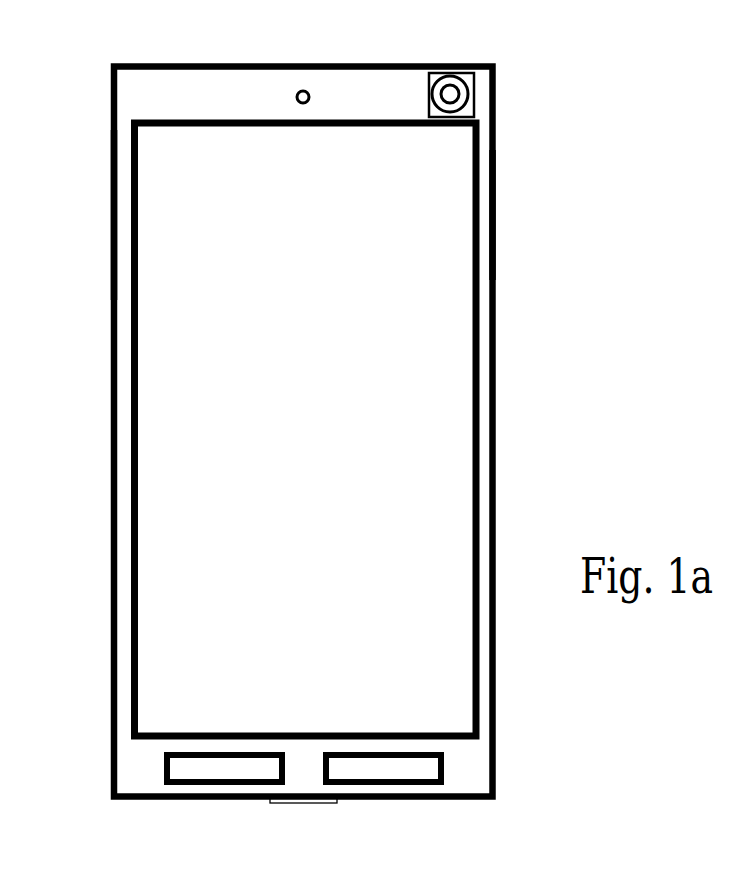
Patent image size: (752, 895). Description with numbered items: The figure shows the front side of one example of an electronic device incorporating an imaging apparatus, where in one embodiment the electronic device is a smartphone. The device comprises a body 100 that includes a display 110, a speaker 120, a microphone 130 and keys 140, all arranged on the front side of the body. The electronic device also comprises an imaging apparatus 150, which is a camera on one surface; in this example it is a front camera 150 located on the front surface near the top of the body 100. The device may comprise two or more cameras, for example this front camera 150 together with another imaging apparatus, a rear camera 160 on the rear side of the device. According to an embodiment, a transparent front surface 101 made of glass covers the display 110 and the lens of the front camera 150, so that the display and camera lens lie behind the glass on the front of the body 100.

The body 100 is at (125, 98).
The transparent front surface 101 is at (125, 211).
The display 110 is at (158, 328).
The speaker 120 is at (303, 90).
The microphone 130 is at (297, 804).
The keys 140 is at (340, 752).
The imaging apparatus 150 is at (471, 86).
The rear camera 160 is at (518, 216).